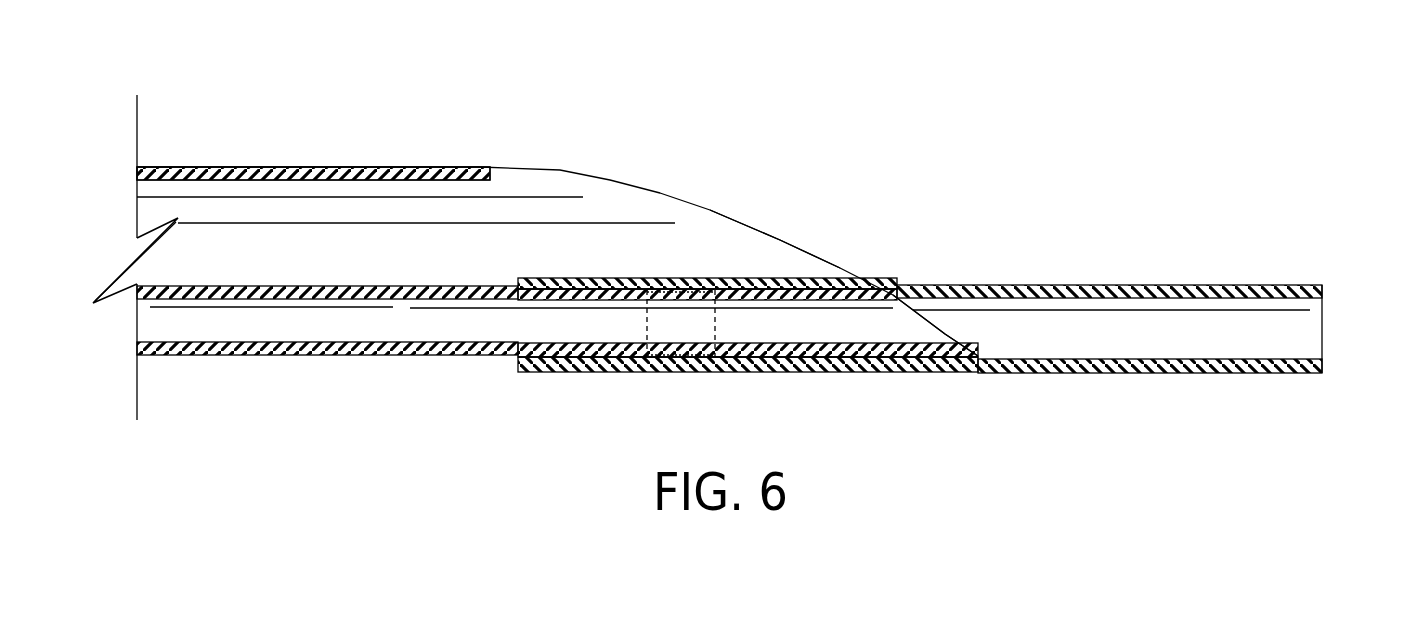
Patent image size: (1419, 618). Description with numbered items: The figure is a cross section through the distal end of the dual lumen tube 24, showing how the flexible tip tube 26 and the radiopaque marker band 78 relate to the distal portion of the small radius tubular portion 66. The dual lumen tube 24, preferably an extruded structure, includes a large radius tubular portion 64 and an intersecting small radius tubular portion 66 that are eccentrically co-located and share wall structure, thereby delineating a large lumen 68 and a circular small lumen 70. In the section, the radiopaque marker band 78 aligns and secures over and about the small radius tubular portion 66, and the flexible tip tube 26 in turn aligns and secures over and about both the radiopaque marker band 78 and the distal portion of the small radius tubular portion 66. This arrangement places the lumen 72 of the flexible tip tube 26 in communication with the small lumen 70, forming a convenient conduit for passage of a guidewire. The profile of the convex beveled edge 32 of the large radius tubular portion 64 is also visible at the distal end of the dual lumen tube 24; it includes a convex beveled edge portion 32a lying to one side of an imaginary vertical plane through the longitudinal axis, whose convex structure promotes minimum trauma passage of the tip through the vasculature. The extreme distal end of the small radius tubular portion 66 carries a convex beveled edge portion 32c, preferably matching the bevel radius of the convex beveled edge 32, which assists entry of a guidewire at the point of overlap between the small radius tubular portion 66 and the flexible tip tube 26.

The dual lumen tube 24 is at (232, 167).
The flexible tip tube 26 is at (1109, 286).
The convex beveled edge 32 is at (557, 226).
The convex beveled edge portion 32a is at (804, 222).
The convex beveled edge portion 32c is at (975, 287).
The large radius tubular portion 64 is at (313, 134).
The small radius tubular portion 66 is at (327, 350).
The large lumen 68 is at (426, 132).
The small lumen 70 is at (319, 371).
The lumen 72 is at (1152, 324).
The radiopaque marker band 78 is at (618, 240).